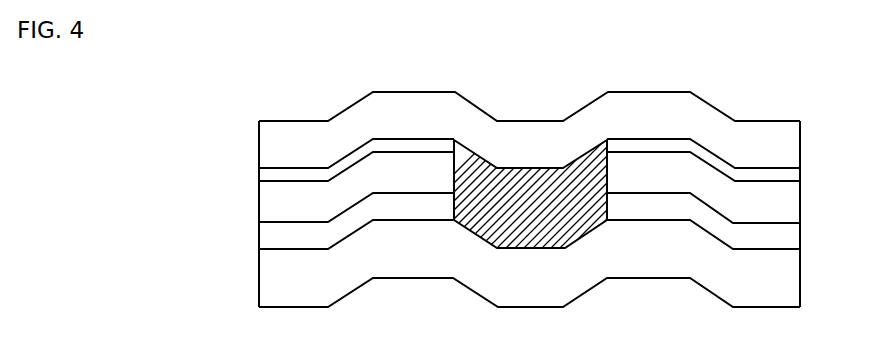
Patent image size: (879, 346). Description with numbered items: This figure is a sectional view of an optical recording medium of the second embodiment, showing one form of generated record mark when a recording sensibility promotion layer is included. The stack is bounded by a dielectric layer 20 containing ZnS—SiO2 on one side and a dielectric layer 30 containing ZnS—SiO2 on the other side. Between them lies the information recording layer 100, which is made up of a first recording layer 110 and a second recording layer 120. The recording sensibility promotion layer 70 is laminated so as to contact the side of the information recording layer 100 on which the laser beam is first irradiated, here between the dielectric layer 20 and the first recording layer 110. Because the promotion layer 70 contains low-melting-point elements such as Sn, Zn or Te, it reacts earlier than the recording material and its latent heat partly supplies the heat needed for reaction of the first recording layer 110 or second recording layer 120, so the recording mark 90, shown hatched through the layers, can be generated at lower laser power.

The dielectric layer 20 is at (791, 145).
The recording sensibility promotion layer 70 is at (791, 177).
The first recording layer 110 is at (791, 202).
The second recording layer 120 is at (791, 237).
The dielectric layer 30 is at (791, 278).
The recording mark 90 is at (532, 183).
The information recording layer 100 is at (240, 183).